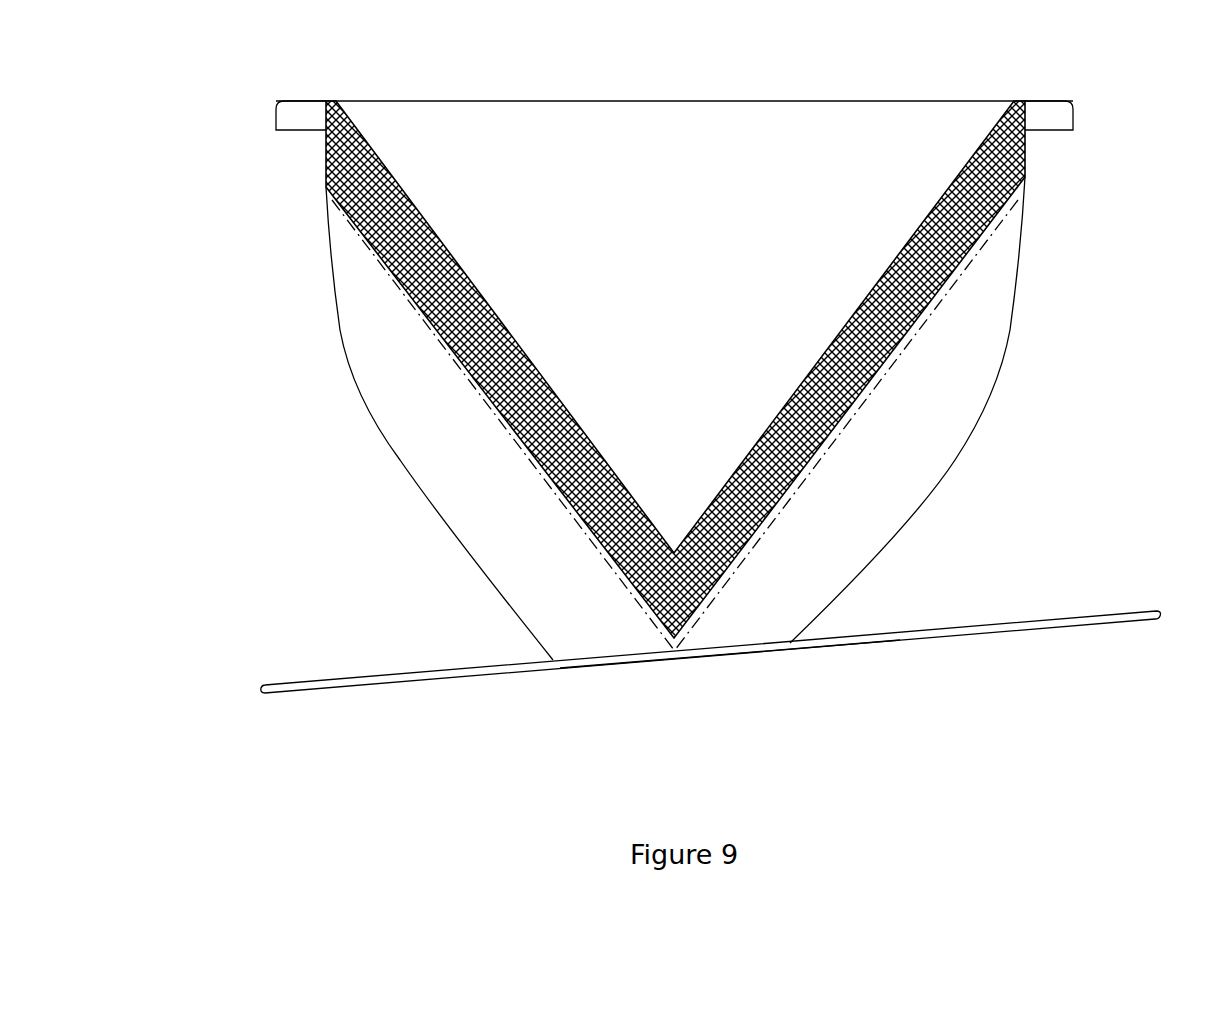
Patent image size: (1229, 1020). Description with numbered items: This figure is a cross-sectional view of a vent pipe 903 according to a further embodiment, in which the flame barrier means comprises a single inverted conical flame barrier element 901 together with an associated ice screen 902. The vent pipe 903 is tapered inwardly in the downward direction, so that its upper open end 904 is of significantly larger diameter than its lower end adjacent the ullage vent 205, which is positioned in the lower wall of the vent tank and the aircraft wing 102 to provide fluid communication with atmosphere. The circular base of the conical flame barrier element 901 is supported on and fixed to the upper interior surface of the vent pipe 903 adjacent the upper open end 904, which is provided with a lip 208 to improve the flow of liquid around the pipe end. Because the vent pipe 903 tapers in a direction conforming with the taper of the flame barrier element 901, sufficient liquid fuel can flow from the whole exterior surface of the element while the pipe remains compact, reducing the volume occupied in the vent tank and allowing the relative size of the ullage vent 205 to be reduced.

The upper open end 904 is at (819, 103).
The lip 208 is at (286, 130).
The inverted conical flame barrier element 901 is at (472, 352).
The vent pipe 903 is at (375, 418).
The ice screen 902 is at (556, 502).
The aircraft wing 102 is at (342, 677).
The ullage vent 205 is at (720, 655).